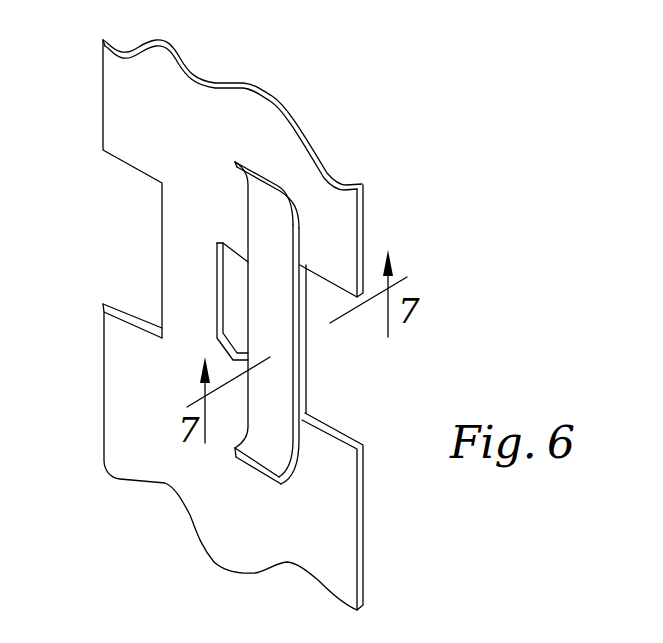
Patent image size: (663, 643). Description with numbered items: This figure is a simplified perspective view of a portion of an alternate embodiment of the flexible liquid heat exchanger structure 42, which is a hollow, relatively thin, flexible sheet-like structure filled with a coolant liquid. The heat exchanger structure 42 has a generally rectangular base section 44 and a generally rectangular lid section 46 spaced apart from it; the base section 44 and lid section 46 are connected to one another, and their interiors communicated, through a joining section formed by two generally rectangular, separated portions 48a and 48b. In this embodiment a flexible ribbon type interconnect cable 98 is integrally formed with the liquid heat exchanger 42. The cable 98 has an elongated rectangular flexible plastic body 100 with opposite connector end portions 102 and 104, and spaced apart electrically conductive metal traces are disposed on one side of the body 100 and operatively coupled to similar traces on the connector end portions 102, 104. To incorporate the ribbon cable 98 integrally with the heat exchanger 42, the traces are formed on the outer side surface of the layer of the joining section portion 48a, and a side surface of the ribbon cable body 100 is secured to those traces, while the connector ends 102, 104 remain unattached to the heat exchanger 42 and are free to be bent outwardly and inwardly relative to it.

The liquid heat exchanger structure 42 is at (313, 80).
The base section 44 is at (376, 533).
The lid section 46 is at (374, 233).
The joining section portion 48a is at (310, 358).
The joining section portion 48b is at (161, 248).
The flexible ribbon type interconnect cable 98 is at (252, 228).
The flexible plastic body 100 is at (279, 324).
The connector end portion 102 is at (246, 455).
The connector end portion 104 is at (266, 170).